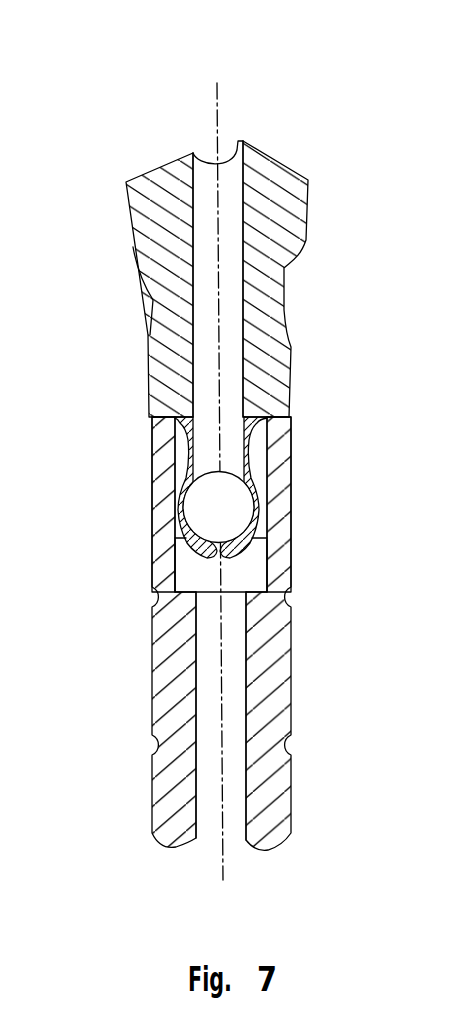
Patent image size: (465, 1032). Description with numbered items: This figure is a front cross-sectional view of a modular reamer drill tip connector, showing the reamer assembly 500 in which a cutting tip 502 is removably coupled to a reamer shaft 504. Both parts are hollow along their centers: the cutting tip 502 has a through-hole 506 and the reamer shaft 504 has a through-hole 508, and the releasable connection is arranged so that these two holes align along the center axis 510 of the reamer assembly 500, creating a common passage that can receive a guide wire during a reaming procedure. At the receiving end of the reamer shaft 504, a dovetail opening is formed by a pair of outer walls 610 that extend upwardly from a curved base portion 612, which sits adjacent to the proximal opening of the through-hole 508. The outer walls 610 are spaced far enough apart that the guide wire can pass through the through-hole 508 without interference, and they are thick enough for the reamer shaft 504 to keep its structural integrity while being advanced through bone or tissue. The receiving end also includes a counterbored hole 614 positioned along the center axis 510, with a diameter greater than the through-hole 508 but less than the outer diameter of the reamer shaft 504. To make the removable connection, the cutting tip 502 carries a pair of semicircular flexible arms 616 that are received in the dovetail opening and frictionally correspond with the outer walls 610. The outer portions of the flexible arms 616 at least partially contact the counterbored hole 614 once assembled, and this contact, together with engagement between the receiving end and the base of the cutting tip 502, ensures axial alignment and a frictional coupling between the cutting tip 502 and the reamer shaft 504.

The reamer assembly 500 is at (120, 114).
The cutting tip 502 is at (267, 160).
The reamer shaft 504 is at (283, 720).
The through-hole of the cutting tip 506 is at (231, 290).
The through-hole of the reamer shaft 508 is at (207, 783).
The center axis 510 is at (217, 102).
The outer walls 610 is at (157, 462).
The curved base portion 612 is at (218, 560).
The counterbored hole 614 is at (243, 573).
The flexible arms 616 is at (181, 541).